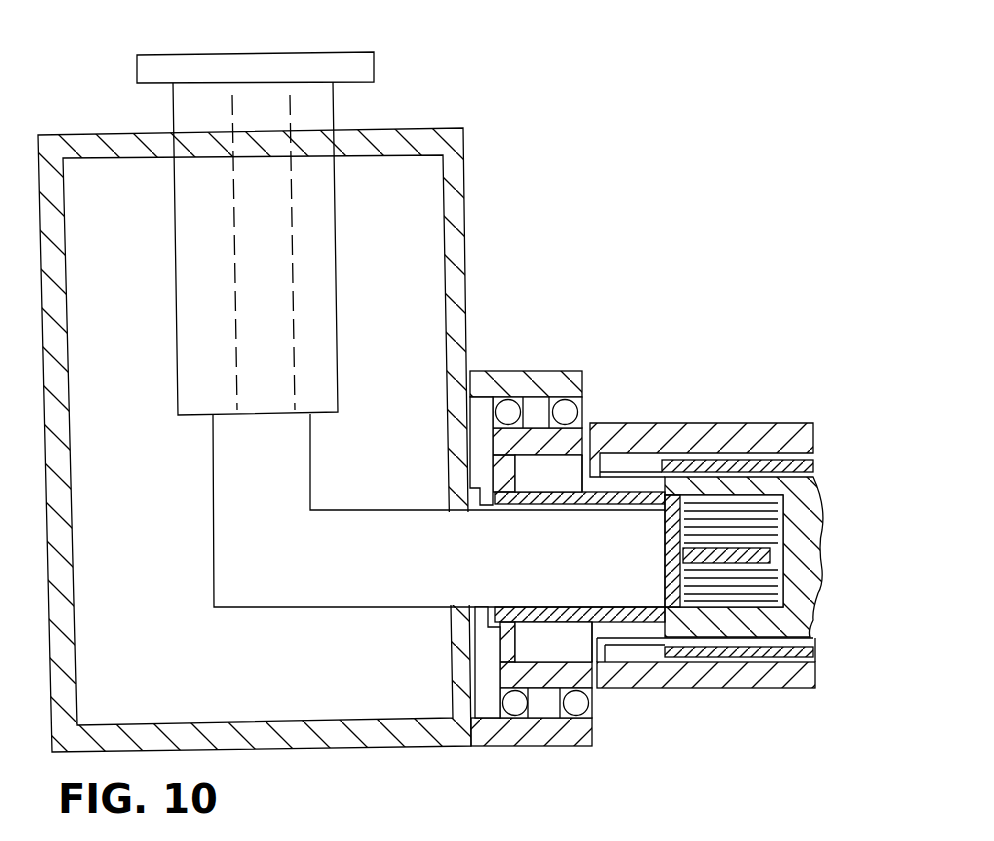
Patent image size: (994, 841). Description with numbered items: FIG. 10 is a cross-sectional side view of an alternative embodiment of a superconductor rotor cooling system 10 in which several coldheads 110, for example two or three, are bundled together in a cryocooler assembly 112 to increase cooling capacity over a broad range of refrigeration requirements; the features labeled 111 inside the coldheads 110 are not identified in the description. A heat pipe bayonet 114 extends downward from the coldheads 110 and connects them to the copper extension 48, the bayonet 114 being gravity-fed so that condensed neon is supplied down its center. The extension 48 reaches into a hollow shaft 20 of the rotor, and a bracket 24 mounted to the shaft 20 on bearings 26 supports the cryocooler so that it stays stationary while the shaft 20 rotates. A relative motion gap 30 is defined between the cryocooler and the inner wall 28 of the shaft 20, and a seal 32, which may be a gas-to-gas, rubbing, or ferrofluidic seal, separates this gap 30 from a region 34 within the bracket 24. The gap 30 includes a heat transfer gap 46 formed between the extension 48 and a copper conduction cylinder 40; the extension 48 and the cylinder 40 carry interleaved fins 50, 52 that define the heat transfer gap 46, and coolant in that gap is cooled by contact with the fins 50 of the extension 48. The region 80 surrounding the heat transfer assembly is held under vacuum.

The motor assembly 10 is at (716, 399).
The hollow shaft 20 is at (668, 689).
The bracket 24 is at (472, 748).
The bearings 26 is at (571, 400).
The inner wall 28 is at (561, 625).
The relative motion gap 30 is at (518, 604).
The seal 32 is at (477, 647).
The region 34 is at (477, 452).
The conduction cylinder 40 is at (817, 667).
The heat transfer gap 46 is at (745, 609).
The copper extension 48 is at (668, 531).
The fins 50 is at (690, 588).
The fins 52 is at (785, 578).
The region 80 is at (588, 468).
The coldheads 110 is at (337, 223).
The fluid passages 111 is at (203, 216).
The cryocooler assembly 112 is at (358, 452).
The heat pipe bayonet 114 is at (258, 608).